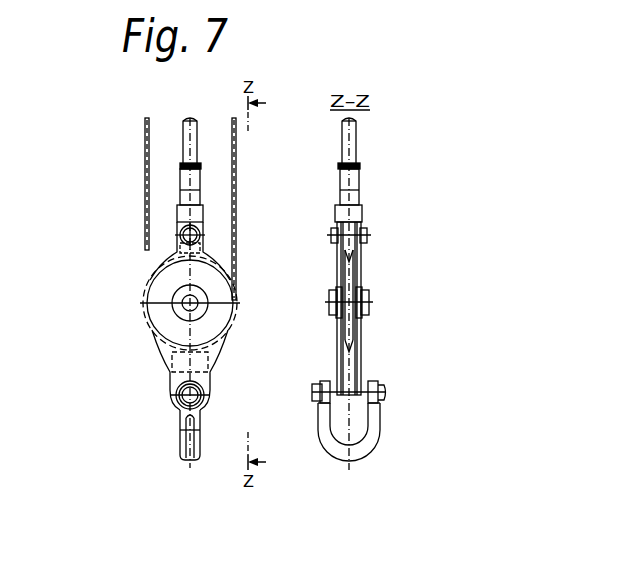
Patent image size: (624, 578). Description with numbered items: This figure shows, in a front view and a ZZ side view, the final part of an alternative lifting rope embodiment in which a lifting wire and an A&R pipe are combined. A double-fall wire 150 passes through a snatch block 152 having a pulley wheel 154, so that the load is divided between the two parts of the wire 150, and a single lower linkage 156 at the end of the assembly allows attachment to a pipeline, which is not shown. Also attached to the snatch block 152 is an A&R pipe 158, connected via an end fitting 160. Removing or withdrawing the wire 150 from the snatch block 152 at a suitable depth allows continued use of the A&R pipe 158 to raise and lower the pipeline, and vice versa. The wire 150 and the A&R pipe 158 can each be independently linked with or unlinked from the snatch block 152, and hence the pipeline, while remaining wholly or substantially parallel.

The double-fall wire 150 is at (108, 146).
The snatch block 152 is at (261, 316).
The pulley wheel 154 is at (126, 303).
The lower linkage 156 is at (235, 294).
The A&R pipe 158 is at (266, 124).
The end fitting 160 is at (250, 187).